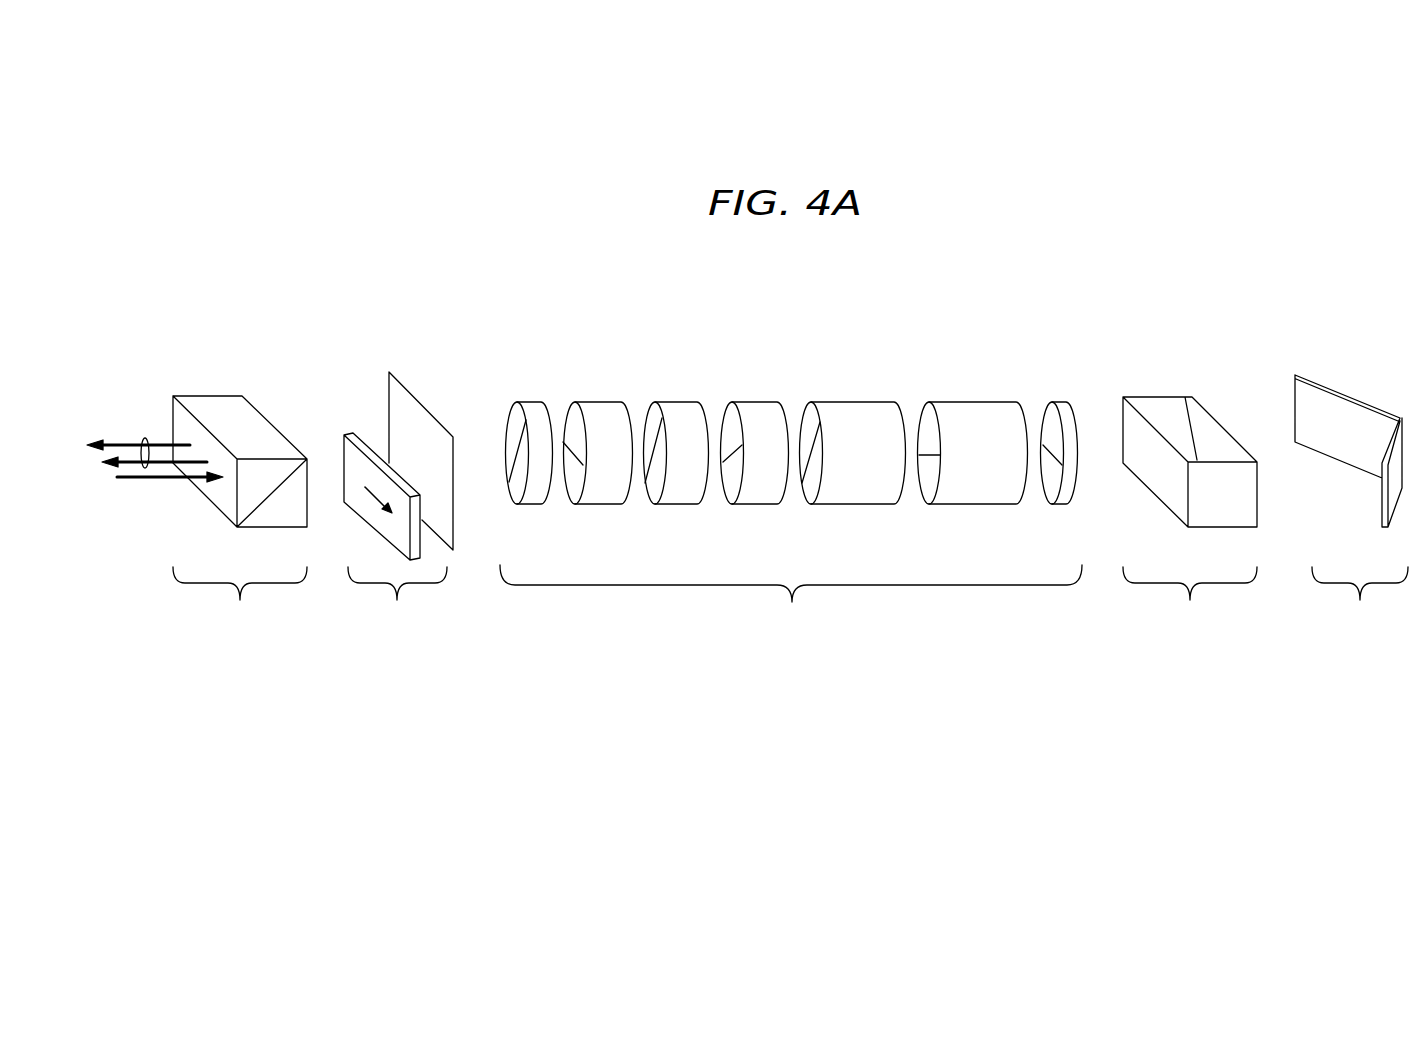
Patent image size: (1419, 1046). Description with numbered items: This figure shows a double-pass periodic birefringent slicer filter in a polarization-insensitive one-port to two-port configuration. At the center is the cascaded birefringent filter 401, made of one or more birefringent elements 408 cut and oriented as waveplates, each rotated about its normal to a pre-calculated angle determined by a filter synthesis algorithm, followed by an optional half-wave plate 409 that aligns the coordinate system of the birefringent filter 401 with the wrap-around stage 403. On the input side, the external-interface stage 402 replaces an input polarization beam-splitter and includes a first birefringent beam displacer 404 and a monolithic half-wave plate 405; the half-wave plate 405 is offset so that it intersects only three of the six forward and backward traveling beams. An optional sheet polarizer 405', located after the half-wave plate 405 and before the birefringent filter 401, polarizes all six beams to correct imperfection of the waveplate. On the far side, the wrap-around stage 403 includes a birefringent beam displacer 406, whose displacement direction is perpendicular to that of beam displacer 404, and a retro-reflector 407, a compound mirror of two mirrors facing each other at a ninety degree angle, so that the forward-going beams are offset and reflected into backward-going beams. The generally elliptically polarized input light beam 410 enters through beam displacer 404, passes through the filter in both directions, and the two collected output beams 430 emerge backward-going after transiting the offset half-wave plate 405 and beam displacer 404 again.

The birefringent filter 401 is at (791, 516).
The external-interface stage 402 is at (473, 658).
The wrap-around stage 403 is at (1418, 658).
The birefringent beam displacer 404 is at (207, 396).
The monolithic λ/2 waveplate 405 is at (373, 444).
The sheet polarizer 405' is at (421, 439).
The birefringent beam displacer 406 is at (1157, 396).
The retro-reflector 407 is at (1357, 393).
The birefringent elements 408 is at (507, 418).
The λ/2 waveplate 409 is at (1073, 417).
The input light beam 410 is at (163, 480).
The collected output beams 430 is at (145, 437).